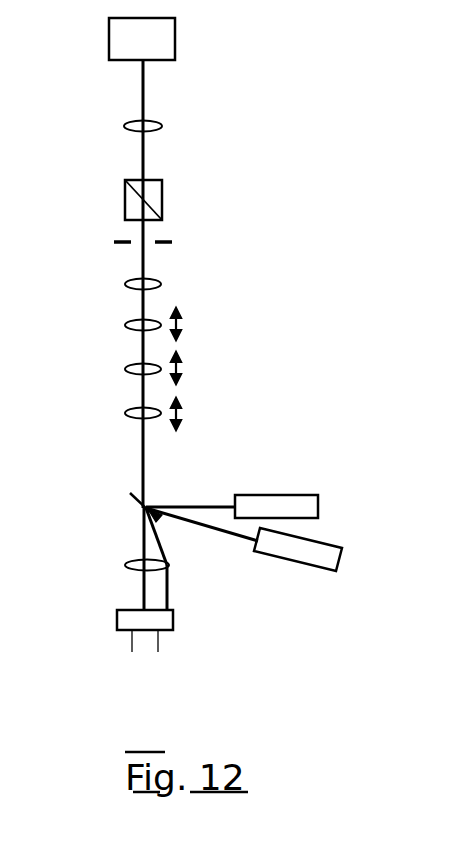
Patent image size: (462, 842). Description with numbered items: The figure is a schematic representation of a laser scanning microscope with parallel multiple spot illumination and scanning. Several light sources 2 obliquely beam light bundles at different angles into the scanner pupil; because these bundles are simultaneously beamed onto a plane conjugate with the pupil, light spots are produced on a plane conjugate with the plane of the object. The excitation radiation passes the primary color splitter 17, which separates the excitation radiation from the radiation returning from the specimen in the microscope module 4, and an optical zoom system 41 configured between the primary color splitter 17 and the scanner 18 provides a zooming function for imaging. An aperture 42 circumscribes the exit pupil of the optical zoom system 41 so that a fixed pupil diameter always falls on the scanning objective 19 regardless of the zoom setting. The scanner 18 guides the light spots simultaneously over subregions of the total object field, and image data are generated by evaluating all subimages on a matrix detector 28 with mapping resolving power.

The microscope module 4 is at (108, 32).
The scanning objective 19 is at (162, 127).
The scanner 18 is at (163, 193).
The aperture 42 is at (173, 241).
The optical zoom system 41 is at (218, 275).
The primary color splitter 17 is at (135, 498).
The light sources 2 is at (367, 520).
The matrix detector 28 is at (175, 618).